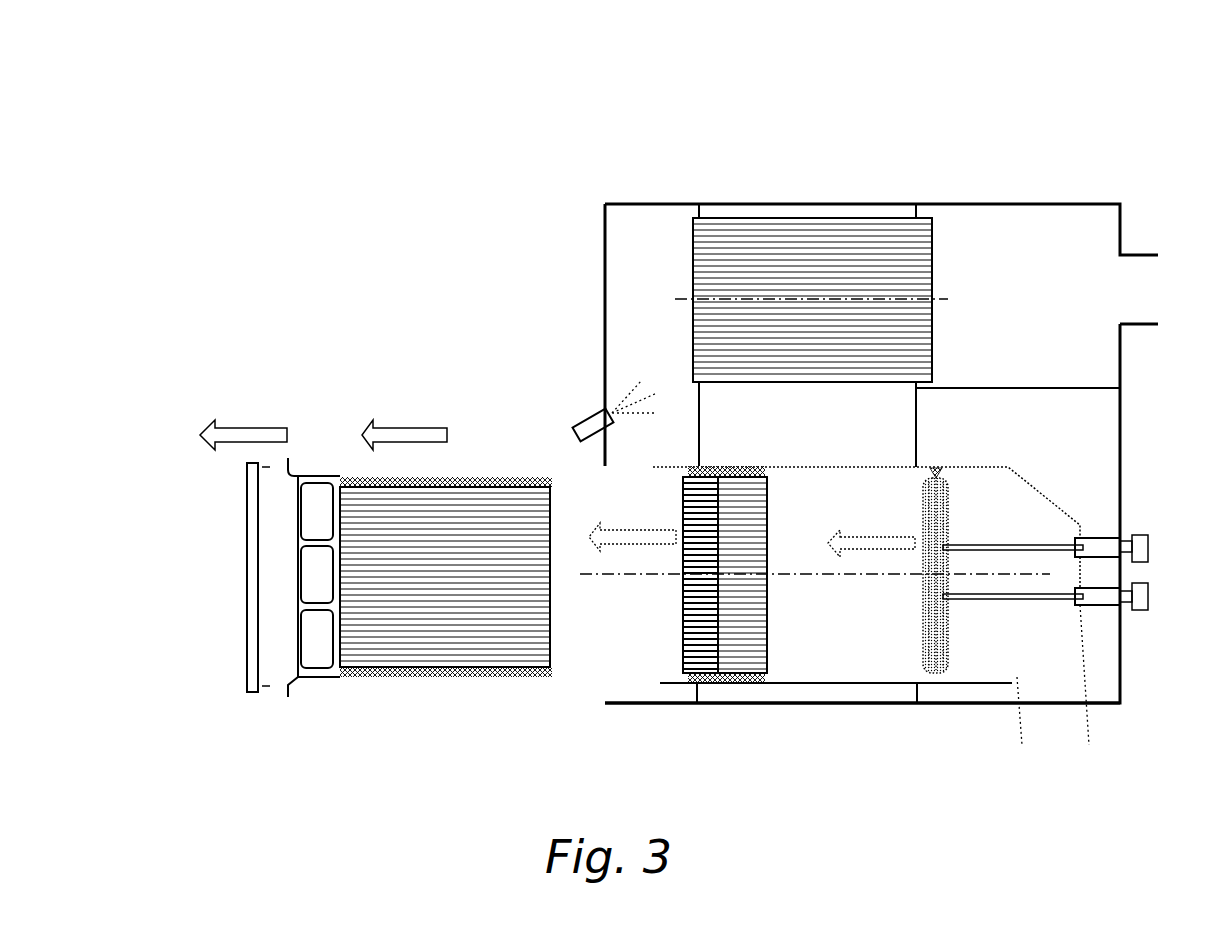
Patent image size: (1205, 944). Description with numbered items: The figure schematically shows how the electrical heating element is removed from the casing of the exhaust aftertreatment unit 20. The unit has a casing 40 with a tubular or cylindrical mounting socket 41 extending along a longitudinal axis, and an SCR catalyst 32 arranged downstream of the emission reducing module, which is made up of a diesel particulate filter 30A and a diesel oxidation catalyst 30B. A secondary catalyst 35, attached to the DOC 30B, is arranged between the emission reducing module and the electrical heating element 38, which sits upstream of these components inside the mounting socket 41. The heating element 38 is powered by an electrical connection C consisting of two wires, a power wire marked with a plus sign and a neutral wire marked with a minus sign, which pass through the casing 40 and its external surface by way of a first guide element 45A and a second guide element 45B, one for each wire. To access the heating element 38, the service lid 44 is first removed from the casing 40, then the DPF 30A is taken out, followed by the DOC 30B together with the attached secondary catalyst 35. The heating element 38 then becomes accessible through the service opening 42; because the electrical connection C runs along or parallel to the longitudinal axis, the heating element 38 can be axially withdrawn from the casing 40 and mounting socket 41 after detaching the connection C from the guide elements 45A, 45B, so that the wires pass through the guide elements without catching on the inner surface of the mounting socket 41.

The exhaust aftertreatment unit 20 is at (971, 163).
The SCR catalyst 32 is at (755, 218).
The service opening 42 is at (593, 503).
The diesel particulate filter 30A is at (450, 675).
The diesel oxidation catalyst 30B is at (697, 665).
The secondary catalyst 35 is at (742, 677).
The electrical heating element 38 is at (935, 675).
The casing 40 is at (847, 703).
The mounting socket 41 is at (877, 683).
The service lid 44 is at (255, 458).
The first guide element 45A is at (1140, 532).
The second guide element 45B is at (1142, 612).
The electrical connection C is at (1053, 675).